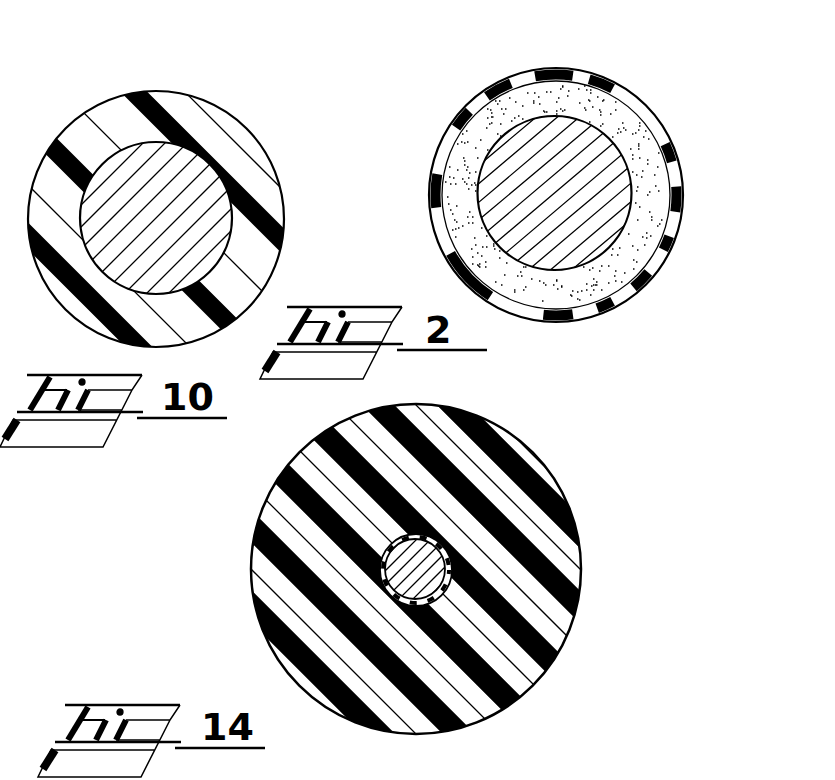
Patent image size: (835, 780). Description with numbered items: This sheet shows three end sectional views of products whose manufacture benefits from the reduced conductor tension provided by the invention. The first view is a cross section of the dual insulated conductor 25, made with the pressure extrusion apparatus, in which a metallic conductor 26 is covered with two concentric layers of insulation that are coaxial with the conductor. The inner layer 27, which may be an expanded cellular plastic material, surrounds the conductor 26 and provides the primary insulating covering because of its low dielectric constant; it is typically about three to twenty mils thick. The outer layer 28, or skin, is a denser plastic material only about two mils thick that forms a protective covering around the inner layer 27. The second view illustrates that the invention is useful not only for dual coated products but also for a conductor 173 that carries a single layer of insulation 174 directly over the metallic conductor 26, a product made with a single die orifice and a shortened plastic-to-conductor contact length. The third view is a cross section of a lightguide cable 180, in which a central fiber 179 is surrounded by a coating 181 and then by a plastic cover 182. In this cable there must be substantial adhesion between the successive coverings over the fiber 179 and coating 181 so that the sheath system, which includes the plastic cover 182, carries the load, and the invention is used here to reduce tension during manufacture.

In FIG. 10, the single-layer insulated conductor 173 is at (223, 86).
In FIG. 10, the single layer of insulation 174 is at (238, 133).
In FIG. 10, the metallic conductor 26 is at (217, 210).
In FIG. 2, the metallic conductor 26 is at (503, 162).
In FIG. 2, the dual insulated conductor 25 is at (619, 65).
In FIG. 2, the inner layer 27 is at (613, 113).
In FIG. 2, the outer layer 28 is at (670, 147).
In FIG. 14, the lightguide cable 180 is at (552, 441).
In FIG. 14, the fiber 179 is at (440, 572).
In FIG. 14, the coating 181 is at (452, 546).
In FIG. 14, the plastic cover 182 is at (553, 638).